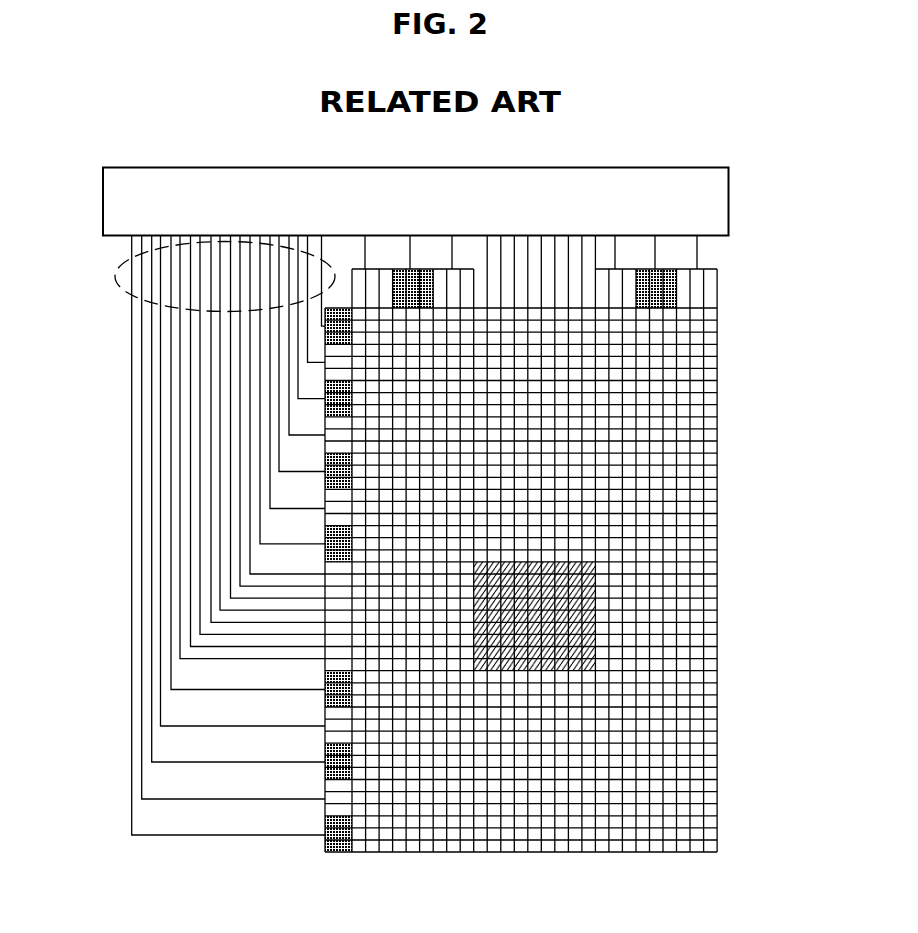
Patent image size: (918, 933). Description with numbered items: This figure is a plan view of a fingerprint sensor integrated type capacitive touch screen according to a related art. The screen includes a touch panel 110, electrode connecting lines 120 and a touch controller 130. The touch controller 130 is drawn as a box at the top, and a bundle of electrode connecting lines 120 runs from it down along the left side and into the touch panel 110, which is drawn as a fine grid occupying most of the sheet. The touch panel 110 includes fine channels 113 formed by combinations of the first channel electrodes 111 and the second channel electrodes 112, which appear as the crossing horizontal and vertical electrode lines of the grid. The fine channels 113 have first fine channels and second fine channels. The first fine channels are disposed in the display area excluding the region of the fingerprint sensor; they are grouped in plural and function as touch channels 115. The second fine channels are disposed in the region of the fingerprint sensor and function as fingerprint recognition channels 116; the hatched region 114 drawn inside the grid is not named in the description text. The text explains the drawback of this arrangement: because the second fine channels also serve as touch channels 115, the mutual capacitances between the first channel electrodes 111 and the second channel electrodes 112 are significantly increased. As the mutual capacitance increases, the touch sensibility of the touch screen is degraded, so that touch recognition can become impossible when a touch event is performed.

The touch panel 110 is at (576, 544).
The first channel electrodes 111 is at (703, 397).
The second channel electrodes 112 is at (708, 416).
The fine channels 113 is at (703, 459).
The touch area 114 is at (598, 615).
The touch channels 115 is at (229, 836).
The fingerprint recognition channels 116 is at (180, 627).
The electrode connecting lines 120 is at (115, 276).
The touch controller 130 is at (729, 202).